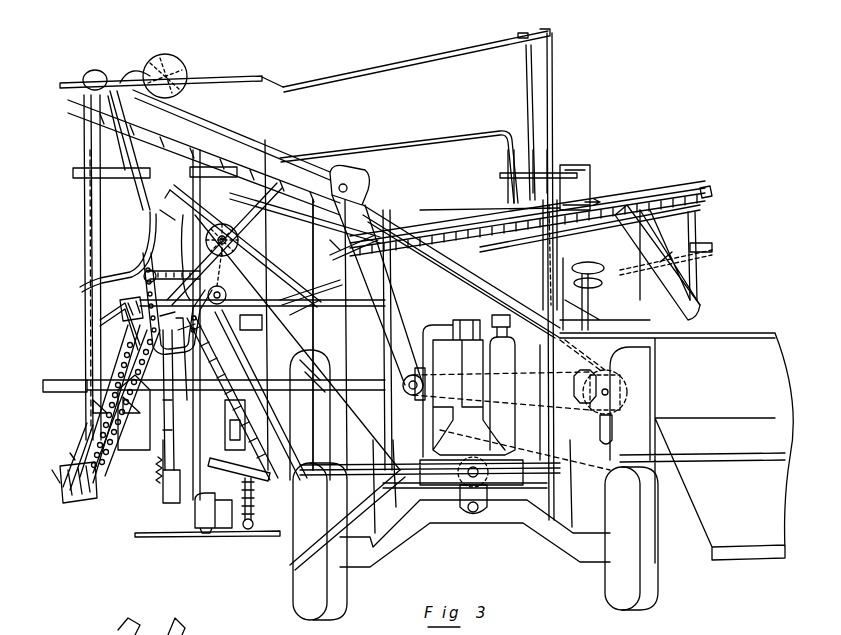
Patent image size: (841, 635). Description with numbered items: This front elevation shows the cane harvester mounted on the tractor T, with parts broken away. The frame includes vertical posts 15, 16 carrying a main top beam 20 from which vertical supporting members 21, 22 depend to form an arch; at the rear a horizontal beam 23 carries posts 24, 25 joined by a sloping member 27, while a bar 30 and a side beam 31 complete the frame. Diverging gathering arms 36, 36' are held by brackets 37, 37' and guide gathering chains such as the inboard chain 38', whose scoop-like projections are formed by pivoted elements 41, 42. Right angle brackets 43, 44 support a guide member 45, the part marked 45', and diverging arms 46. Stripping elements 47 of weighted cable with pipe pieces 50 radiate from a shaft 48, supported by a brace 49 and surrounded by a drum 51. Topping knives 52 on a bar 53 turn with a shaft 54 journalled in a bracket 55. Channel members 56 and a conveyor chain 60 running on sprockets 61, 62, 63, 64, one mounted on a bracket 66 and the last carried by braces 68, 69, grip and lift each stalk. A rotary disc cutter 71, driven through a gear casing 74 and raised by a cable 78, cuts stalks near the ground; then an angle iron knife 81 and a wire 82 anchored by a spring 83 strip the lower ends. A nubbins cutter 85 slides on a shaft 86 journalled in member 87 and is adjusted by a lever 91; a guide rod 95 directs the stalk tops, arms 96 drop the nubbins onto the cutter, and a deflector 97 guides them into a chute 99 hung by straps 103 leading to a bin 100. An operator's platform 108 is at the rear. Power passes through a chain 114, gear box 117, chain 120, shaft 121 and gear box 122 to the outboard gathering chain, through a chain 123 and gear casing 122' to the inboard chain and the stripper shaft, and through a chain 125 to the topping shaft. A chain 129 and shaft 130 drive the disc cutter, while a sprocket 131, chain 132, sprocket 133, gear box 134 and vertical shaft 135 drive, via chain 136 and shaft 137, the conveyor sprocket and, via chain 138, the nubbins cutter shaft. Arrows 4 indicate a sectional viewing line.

The section line 4 is at (63, 470).
The vertical post 15 is at (548, 370).
The vertical post 16 is at (390, 318).
The main top beam 20 is at (85, 122).
The vertical supporting member 21 is at (272, 368).
The vertical supporting member 22 is at (83, 220).
The horizontal beam 23 is at (166, 490).
The post 24 is at (540, 352).
The post 25 is at (338, 352).
The laterally extending member 27 is at (258, 118).
The bar 30 is at (215, 460).
The side beam 31 is at (80, 442).
The gathering arm 36 is at (110, 404).
The gathering arm 36' is at (201, 365).
The bracket 37 is at (100, 326).
The bracket 37' is at (247, 331).
The inboard gathering chain 38' is at (232, 398).
The projection element 41 is at (140, 398).
The projection element 42 is at (130, 420).
The right angle supporting bracket 43 is at (184, 248).
The right angle supporting bracket 44 is at (142, 232).
The guide member 45 is at (307, 415).
The arm 45' is at (347, 505).
The diverging arms 46 is at (72, 173).
The stripping elements 47 is at (243, 215).
The rotatable shaft 48 is at (222, 224).
The brace 49 is at (300, 322).
The pipe weights 50 is at (170, 190).
The hollow metallic drum 51 is at (258, 232).
The knives 52 is at (280, 76).
The bar 53 is at (240, 76).
The shaft 54 is at (170, 52).
The bracket 55 is at (122, 70).
The channel members 56 is at (415, 222).
The conveyor chain 60 is at (488, 230).
The sprocket 61 is at (183, 352).
The large sprocket 62 is at (146, 277).
The sprocket 63 is at (310, 278).
The sprocket 64 is at (683, 192).
The bracket 66 is at (221, 285).
The brace 68 is at (640, 232).
The brace 69 is at (708, 222).
The rotary disc-like cutter 71 is at (168, 540).
The gear casing 74 is at (196, 516).
The cable 78 is at (225, 438).
The angle iron knife 81 is at (164, 418).
The resiliently anchored wire 82 is at (163, 430).
The spring 83 is at (156, 465).
The rotating cutter 85 is at (590, 196).
The shaft 86 is at (526, 87).
The structural member 87 is at (455, 56).
The lever 91 is at (443, 212).
The guide rod 95 is at (405, 140).
The radially extending arms 96 is at (506, 176).
The deflector 97 is at (578, 175).
The chute 99 is at (695, 310).
The bin 100 is at (690, 386).
The straps 103 is at (680, 280).
The operator's platform 108 is at (70, 382).
The chain 114 is at (394, 290).
The gear box 117 is at (88, 77).
The chain 120 is at (90, 237).
The shaft 121 is at (185, 626).
The gear box 122 is at (157, 464).
The gear casing 122' is at (175, 314).
The chain 123 is at (300, 290).
The chain 125 is at (300, 135).
The chain 129 is at (253, 510).
The shaft 130 is at (248, 530).
The sprocket 131 is at (458, 477).
The chain 132 is at (612, 428).
The sprocket 133 is at (588, 370).
The gear box 134 is at (628, 398).
The vertically extending shaft 135 is at (622, 330).
The chain 136 is at (712, 258).
The shaft 137 is at (712, 246).
The chain 138 is at (595, 296).
The tractor T is at (655, 565).